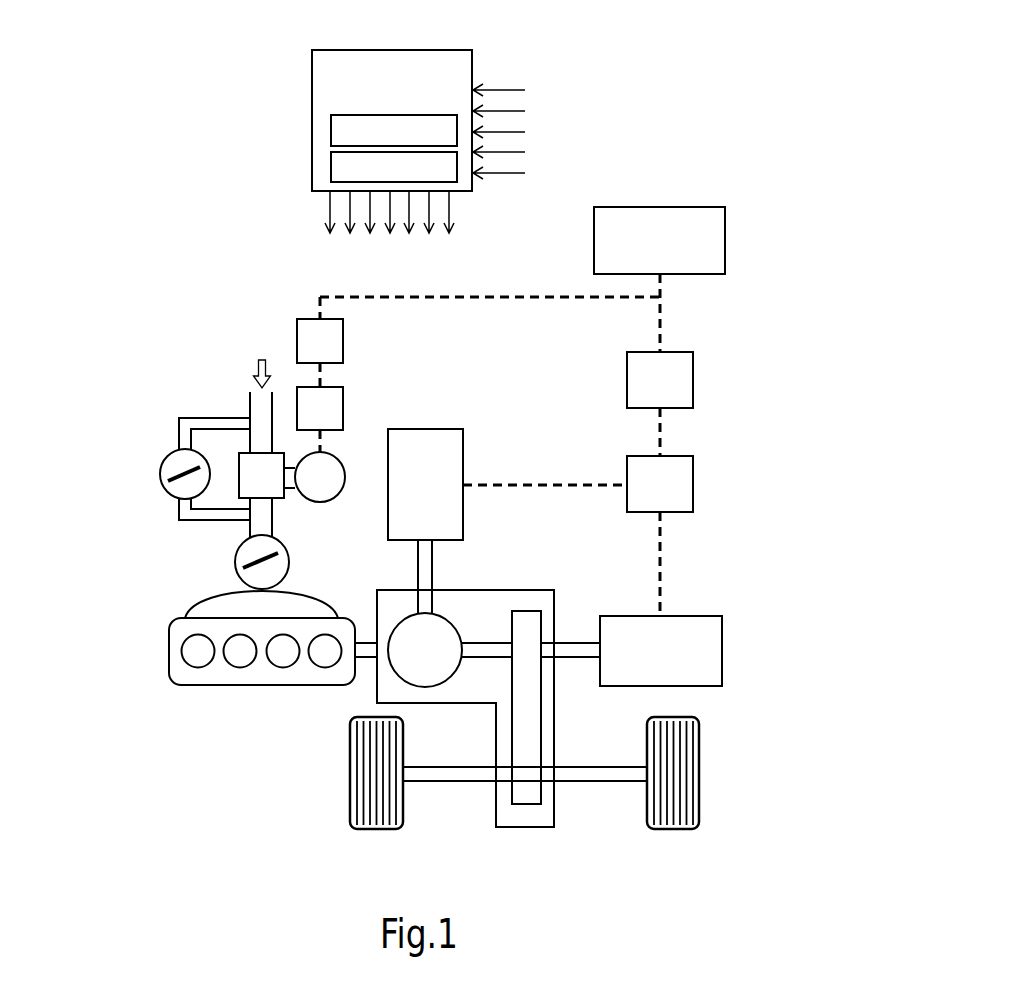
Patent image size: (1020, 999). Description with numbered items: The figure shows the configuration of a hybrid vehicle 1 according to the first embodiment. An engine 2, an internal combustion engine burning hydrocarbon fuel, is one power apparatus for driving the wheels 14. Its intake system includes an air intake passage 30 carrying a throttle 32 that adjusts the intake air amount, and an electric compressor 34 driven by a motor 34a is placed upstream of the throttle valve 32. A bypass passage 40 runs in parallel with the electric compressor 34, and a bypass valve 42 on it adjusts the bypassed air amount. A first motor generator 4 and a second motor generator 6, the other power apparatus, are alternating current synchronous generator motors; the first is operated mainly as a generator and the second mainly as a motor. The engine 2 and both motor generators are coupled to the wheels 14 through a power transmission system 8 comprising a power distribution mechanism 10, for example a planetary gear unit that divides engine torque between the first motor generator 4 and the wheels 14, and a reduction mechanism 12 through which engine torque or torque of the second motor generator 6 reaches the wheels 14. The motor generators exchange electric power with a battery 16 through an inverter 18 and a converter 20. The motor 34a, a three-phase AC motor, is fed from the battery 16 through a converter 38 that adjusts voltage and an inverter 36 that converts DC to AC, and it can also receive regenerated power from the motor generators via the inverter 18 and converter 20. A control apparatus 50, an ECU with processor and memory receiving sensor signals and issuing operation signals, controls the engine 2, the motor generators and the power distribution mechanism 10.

The hybrid vehicle 1 is at (207, 296).
The engine 2 is at (169, 637).
The first motor generator 4 is at (432, 429).
The second motor generator 6 is at (690, 616).
The power transmission system 8 is at (545, 590).
The power distribution mechanism 10 is at (450, 620).
The reduction mechanism 12 is at (522, 610).
The wheels 14 is at (350, 755).
The battery 16 is at (672, 207).
The inverter 18 is at (680, 456).
The converter 20 is at (680, 352).
The air intake passage 30 is at (250, 408).
The throttle 32 is at (237, 565).
The electric compressor 34 is at (277, 498).
The motor 34a is at (333, 502).
The inverter 36 is at (333, 387).
The converter 38 is at (307, 319).
The bypass passage 40 is at (178, 433).
The bypass valve 42 is at (160, 475).
The control apparatus 50 is at (380, 50).